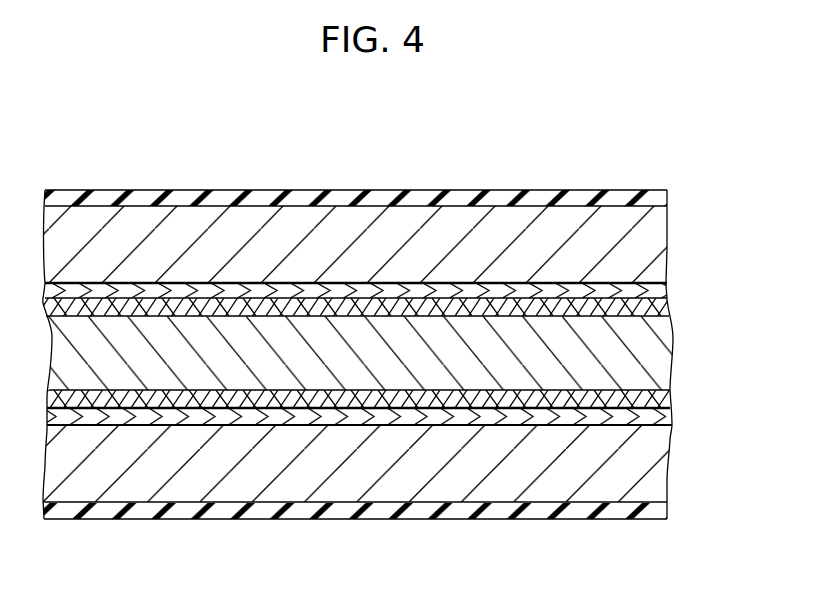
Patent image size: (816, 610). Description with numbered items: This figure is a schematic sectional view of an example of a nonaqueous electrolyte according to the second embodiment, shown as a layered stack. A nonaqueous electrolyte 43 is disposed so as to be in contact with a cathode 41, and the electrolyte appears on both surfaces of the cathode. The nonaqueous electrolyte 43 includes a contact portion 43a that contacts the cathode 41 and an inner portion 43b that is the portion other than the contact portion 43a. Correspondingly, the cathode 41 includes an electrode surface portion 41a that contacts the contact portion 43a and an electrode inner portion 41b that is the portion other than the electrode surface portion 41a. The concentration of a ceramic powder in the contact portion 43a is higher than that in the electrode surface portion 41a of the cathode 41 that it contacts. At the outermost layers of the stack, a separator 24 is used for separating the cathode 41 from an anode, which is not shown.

The separator 24 is at (648, 199).
The nonaqueous electrolyte 43 is at (757, 298).
The contact portion 43a is at (655, 291).
The inner portion 43b is at (661, 228).
The cathode 41 is at (757, 408).
The electrode surface portion 41a is at (660, 305).
The electrode inner portion 41b is at (663, 358).